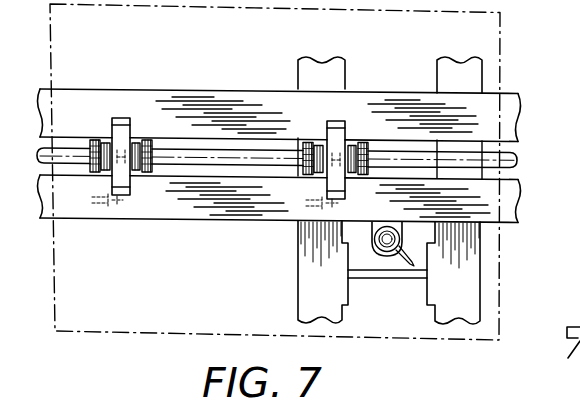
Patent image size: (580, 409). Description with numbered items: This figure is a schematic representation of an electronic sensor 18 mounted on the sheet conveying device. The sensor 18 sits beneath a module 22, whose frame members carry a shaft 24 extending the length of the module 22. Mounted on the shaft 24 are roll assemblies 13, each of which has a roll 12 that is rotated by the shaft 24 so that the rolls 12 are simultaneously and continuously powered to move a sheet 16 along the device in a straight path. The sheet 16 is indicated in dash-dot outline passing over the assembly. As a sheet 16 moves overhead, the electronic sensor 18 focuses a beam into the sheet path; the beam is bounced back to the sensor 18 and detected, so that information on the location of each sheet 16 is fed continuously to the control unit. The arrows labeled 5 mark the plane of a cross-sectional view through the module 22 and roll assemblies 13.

The roll 12 is at (121, 117).
The roll assembly 13 is at (310, 135).
The sheet 16 is at (502, 40).
The sensor 18 is at (386, 252).
The module 22 is at (409, 91).
The shaft 24 is at (177, 163).
The section line 5- 5 is at (252, 22).